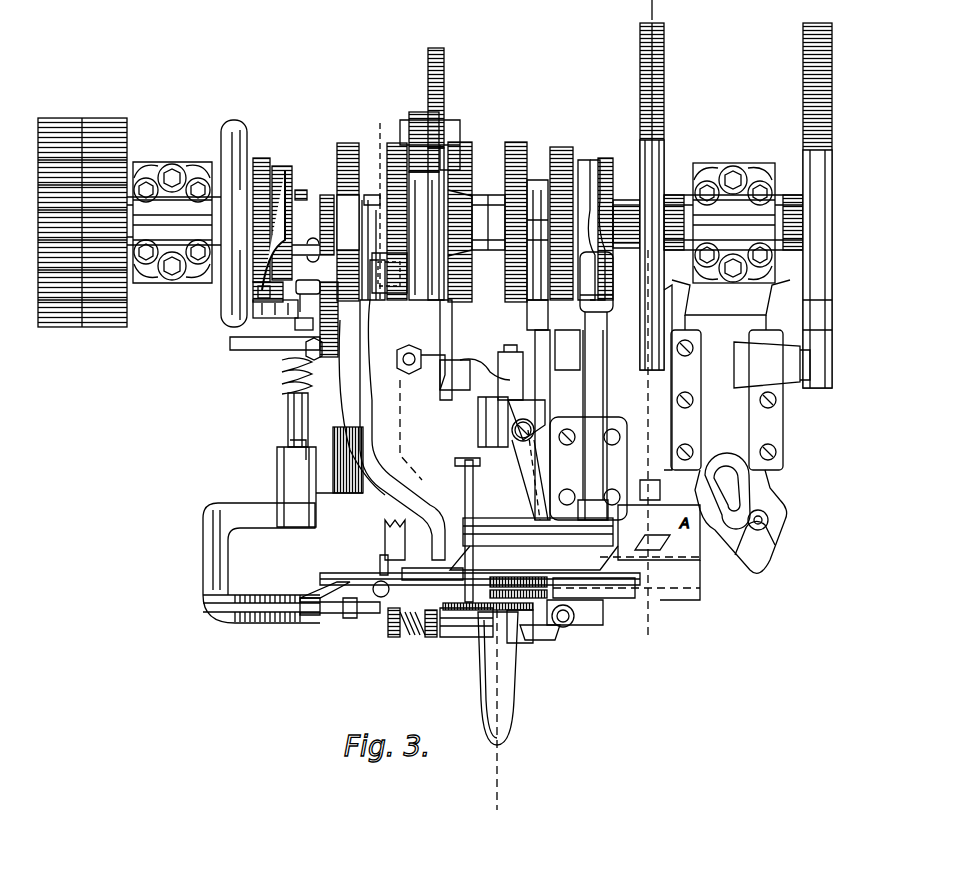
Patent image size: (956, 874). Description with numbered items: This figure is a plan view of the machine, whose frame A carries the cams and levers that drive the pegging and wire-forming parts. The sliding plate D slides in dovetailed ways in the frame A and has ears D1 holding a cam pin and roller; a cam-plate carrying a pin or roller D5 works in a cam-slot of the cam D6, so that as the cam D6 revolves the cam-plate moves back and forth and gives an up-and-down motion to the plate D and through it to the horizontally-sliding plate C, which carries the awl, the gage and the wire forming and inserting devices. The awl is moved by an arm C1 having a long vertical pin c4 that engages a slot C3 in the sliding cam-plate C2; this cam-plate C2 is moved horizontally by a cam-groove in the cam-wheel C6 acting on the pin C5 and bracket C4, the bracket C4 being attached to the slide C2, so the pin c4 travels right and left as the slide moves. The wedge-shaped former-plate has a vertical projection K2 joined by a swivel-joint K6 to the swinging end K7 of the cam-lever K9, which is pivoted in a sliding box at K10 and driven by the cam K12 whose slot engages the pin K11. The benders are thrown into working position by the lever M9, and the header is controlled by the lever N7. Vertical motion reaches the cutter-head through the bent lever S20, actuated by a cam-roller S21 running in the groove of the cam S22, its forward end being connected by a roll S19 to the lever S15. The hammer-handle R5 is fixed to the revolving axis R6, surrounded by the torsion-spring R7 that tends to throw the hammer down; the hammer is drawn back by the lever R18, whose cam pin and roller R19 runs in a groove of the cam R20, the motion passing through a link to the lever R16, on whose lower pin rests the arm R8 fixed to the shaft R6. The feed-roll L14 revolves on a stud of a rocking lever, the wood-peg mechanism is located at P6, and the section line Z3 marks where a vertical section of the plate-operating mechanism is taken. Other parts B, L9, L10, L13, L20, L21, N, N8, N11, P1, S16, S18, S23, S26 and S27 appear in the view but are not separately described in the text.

The cam pin and roller R19 is at (252, 292).
The cam R20 is at (272, 224).
The lever R18 is at (286, 297).
The arm R8 is at (296, 322).
The lever R16 is at (320, 312).
The gear N11 is at (349, 222).
The gear S27 is at (397, 221).
The gear S26 is at (424, 206).
The lever S15 is at (436, 84).
The cam-roller S21 is at (462, 135).
The cam S22 is at (455, 222).
The pin K11 is at (539, 222).
The cam K12 is at (566, 212).
The lever L9 is at (592, 230).
The feed-roll L14 is at (596, 386).
The hub B is at (626, 224).
The cam D6 is at (652, 196).
The cam-wheel C6 is at (817, 205).
The frame A is at (731, 305).
The pin or roller D5 is at (685, 300).
The sliding cam-plate C2 is at (727, 400).
The bracket C4 is at (767, 365).
The pin C5 is at (800, 386).
The slot C3 is at (727, 491).
The arm C1 is at (741, 526).
The vertical pin c4 is at (772, 540).
The ears D1 is at (651, 481).
The sliding plate D is at (652, 543).
The sliding box K10 is at (526, 312).
The lever M9 is at (548, 423).
The housing S23 is at (398, 273).
The bent lever S20 is at (455, 350).
The roll S19 is at (445, 370).
The hub S18 is at (478, 410).
The block S16 is at (521, 392).
The cam-lever K9 is at (581, 462).
The swinging end of cam-lever K7 is at (530, 469).
The rod L21 is at (593, 425).
The plate L13 is at (534, 544).
The post L20 is at (457, 520).
The arm N8 is at (402, 430).
The lever N7 is at (440, 508).
The torsion-spring R7 is at (278, 365).
The revolving axis R6 is at (287, 460).
The hammer-handle R5 is at (200, 551).
The plate L10 is at (340, 588).
The pawl P' P1 is at (389, 558).
The wood-peg mechanism location P6 is at (378, 608).
The sliding plate C is at (595, 585).
The vertical projection K2 is at (545, 612).
The swivel-joint K6 is at (540, 641).
The handle N is at (498, 710).
The section line Z3 is at (643, 646).